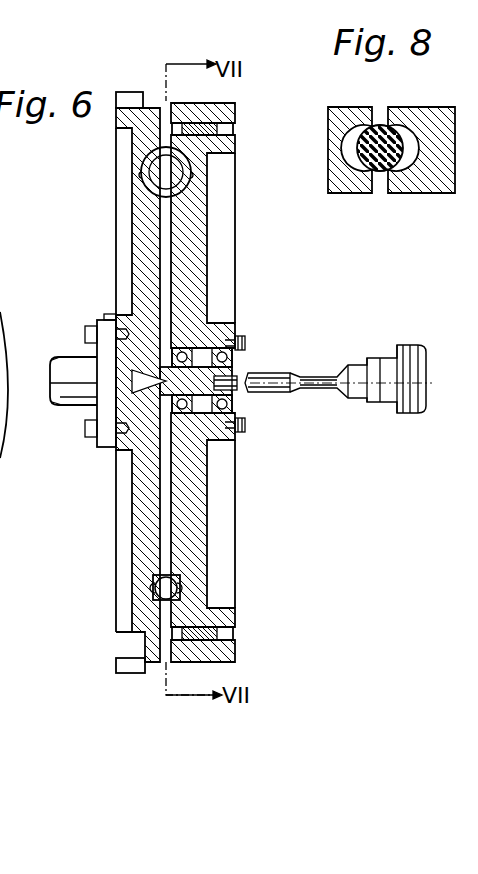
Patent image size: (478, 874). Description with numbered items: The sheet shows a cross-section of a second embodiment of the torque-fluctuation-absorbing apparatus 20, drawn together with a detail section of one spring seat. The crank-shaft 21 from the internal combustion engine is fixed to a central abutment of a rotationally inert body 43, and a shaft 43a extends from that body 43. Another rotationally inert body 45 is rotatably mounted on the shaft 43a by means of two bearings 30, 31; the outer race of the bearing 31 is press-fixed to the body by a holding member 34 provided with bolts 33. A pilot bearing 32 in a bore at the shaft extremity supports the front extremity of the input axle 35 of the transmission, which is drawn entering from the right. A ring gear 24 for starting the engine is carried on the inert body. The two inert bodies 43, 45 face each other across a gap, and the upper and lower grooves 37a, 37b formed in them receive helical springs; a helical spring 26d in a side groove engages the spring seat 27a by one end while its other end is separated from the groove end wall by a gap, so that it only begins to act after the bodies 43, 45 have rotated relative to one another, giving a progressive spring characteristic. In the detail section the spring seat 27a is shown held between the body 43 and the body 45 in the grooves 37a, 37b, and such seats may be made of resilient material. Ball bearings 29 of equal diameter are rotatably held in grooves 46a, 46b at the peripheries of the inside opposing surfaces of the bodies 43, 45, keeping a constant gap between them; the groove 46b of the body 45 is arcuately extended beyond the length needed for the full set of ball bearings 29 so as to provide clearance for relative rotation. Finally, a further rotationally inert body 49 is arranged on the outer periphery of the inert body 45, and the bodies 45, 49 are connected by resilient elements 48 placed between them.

In FIG. 6, the apparatus 20 is at (127, 674).
In FIG. 6, the crank-shaft 21 is at (79, 405).
In FIG. 6, the ring gear 24 is at (125, 100).
In FIG. 6, the helical spring 26d is at (2, 413).
In FIG. 8, the spring seat 27a is at (395, 136).
In FIG. 6, the ball bearings 29 is at (195, 598).
In FIG. 6, the bearing 30 is at (207, 308).
In FIG. 6, the bearing 31 is at (233, 337).
In FIG. 6, the pilot bearing 32 is at (237, 379).
In FIG. 6, the bolts 33 is at (238, 427).
In FIG. 6, the holding member 34 is at (242, 411).
In FIG. 6, the input axle 35 is at (316, 376).
In FIG. 6, the groove 37a is at (141, 176).
In FIG. 8, the groove 37a is at (382, 125).
In FIG. 6, the groove 37b is at (191, 176).
In FIG. 8, the groove 37b is at (386, 172).
In FIG. 6, the rotationally inert body 43 is at (125, 142).
In FIG. 8, the rotationally inert body 43 is at (333, 118).
In FIG. 6, the shaft 43a is at (128, 452).
In FIG. 6, the rotationally inert body 45 is at (236, 149).
In FIG. 8, the rotationally inert body 45 is at (441, 108).
In FIG. 6, the groove 46a is at (152, 590).
In FIG. 6, the groove 46b is at (182, 588).
In FIG. 6, the resilient elements 48 is at (222, 130).
In FIG. 6, the rotationally inert body 49 is at (193, 110).